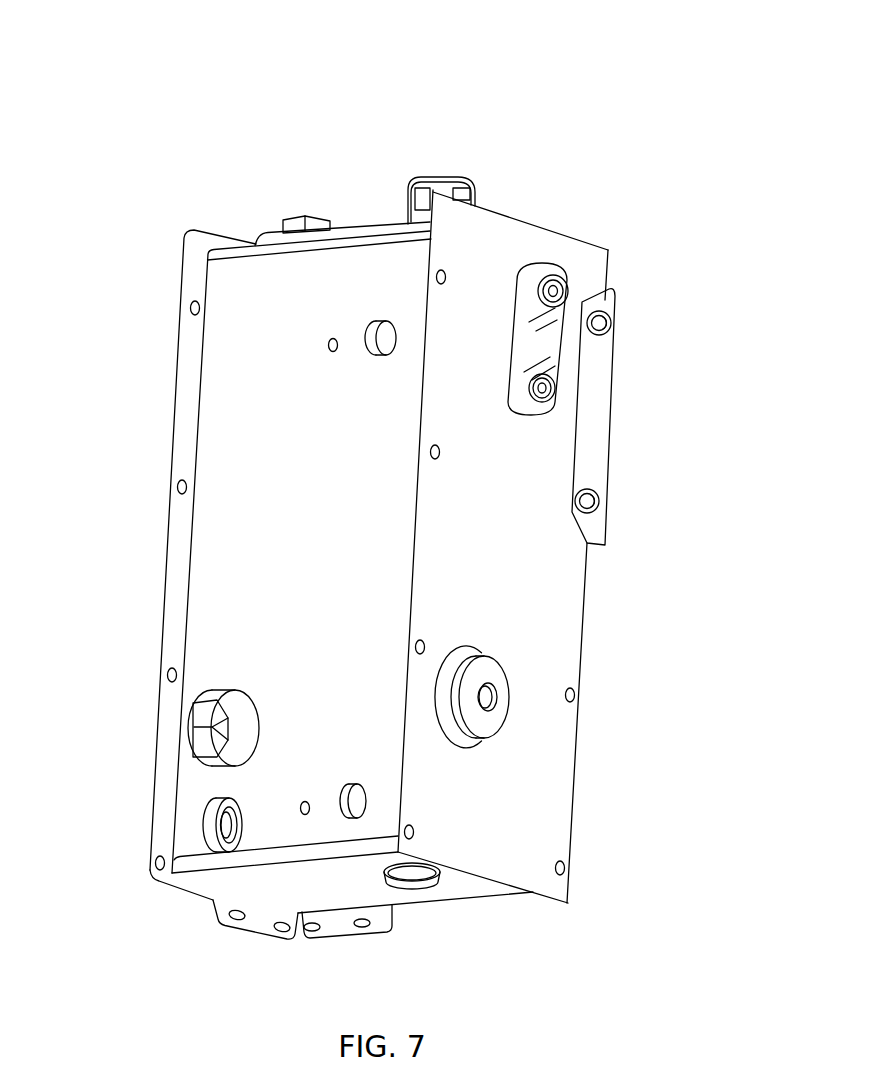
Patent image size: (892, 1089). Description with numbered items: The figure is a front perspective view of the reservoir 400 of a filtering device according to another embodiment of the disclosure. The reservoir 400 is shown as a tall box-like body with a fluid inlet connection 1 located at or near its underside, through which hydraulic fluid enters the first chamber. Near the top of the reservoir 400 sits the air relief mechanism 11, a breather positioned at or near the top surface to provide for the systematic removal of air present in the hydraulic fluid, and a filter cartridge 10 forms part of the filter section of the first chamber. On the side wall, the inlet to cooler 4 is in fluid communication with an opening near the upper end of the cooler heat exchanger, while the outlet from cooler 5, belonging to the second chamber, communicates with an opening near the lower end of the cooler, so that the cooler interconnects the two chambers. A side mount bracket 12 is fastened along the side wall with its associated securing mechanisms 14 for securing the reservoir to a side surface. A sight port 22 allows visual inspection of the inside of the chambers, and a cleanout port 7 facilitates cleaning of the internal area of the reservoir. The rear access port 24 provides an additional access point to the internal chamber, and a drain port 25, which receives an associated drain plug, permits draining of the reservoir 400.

The reservoir 400 is at (504, 60).
The fluid inlet connection 1 is at (423, 887).
The inlet to cooler 4 is at (390, 339).
The outlet from cooler 5 is at (367, 803).
The cleanout port 7 is at (495, 673).
The filter cartridge 10 is at (313, 224).
The air relief mechanism 11 is at (467, 188).
The side mount bracket 12 is at (603, 416).
The securing mechanism 14 is at (607, 322).
The sight port 22 is at (545, 268).
The rear access port 24 is at (227, 727).
The drain port 25 is at (216, 805).